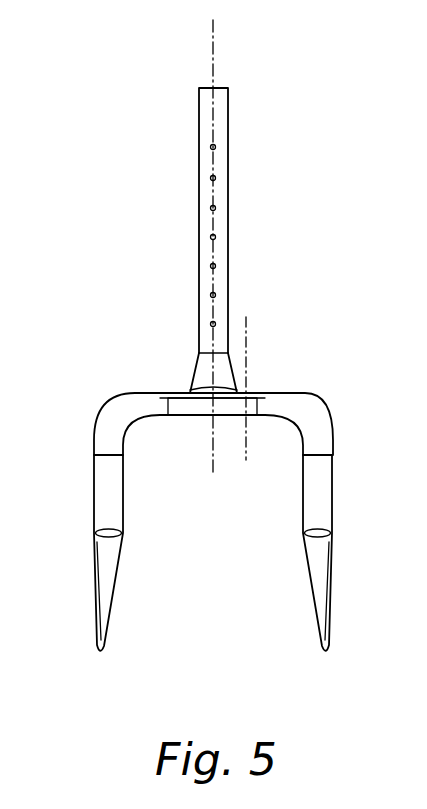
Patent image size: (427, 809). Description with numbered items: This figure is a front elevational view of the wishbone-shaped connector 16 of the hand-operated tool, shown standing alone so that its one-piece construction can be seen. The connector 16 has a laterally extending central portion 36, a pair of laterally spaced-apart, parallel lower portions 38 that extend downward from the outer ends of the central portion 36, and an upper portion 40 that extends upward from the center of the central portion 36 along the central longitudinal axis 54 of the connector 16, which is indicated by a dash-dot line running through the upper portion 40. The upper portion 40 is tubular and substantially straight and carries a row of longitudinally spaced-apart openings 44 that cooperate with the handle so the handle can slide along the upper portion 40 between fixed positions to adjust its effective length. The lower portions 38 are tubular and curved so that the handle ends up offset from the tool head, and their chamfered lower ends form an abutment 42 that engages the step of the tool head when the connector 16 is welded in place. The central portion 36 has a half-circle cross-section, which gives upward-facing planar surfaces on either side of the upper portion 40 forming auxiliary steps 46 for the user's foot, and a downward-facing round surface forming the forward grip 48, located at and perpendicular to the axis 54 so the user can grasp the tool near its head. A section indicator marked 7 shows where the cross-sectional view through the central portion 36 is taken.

The connector 16 is at (86, 226).
The central portion 36 is at (172, 421).
The lower portions 38 is at (94, 498).
The upper portion 40 is at (228, 193).
The abutment 42 is at (312, 546).
The openings 44 is at (216, 148).
The auxiliary steps 46 is at (152, 393).
The forward grip 48 is at (230, 415).
The central longitudinal axis 54 is at (215, 68).
The section line 7- 7 is at (264, 458).